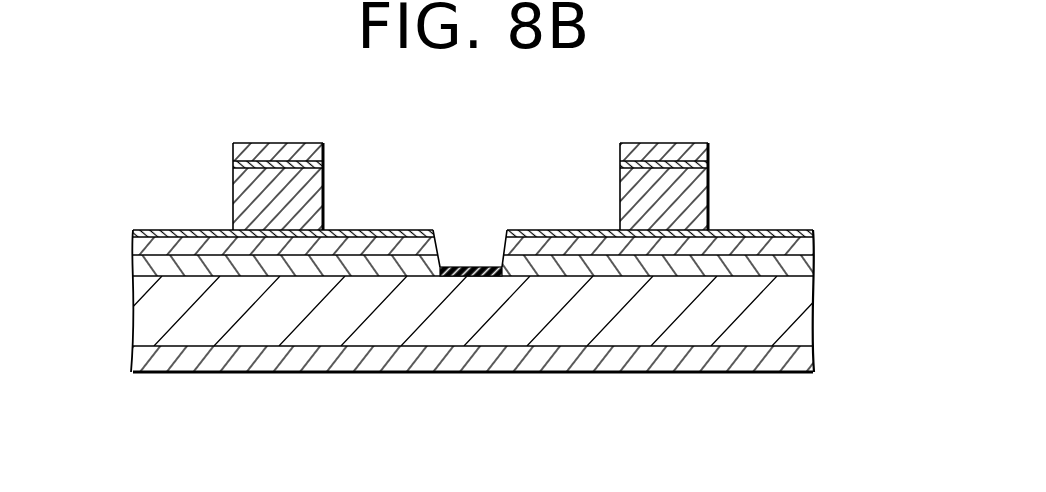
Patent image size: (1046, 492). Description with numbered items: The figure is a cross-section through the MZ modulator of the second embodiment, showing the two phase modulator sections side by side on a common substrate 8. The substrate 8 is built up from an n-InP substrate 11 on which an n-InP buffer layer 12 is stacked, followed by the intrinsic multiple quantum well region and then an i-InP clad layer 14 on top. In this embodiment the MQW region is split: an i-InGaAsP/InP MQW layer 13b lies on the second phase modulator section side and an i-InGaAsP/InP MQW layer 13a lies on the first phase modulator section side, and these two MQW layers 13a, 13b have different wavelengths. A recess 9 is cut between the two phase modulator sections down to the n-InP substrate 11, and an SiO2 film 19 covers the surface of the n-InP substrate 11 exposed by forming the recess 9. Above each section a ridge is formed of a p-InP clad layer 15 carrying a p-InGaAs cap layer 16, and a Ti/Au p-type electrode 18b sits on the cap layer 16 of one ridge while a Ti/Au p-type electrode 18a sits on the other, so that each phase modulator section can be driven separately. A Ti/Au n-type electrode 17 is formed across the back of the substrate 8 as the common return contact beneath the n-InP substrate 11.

The substrate 8 is at (45, 232).
The recess 9 is at (498, 231).
The n-InP substrate 11 is at (805, 317).
The n-InP buffer layer 12 is at (138, 263).
The i-InGaAsP/InP MQW layer 13a is at (800, 250).
The i-InGaAsP/InP MQW layer 13b is at (135, 250).
The i-InP clad layer 14 is at (178, 233).
The p-InP clad layer 15 is at (317, 200).
The p-InGaAs cap layer 16 is at (323, 165).
The n-type electrode 17 is at (800, 357).
The p-type electrode 18a is at (708, 152).
The p-type electrode 18b is at (323, 152).
The SiO2 film 19 is at (447, 266).